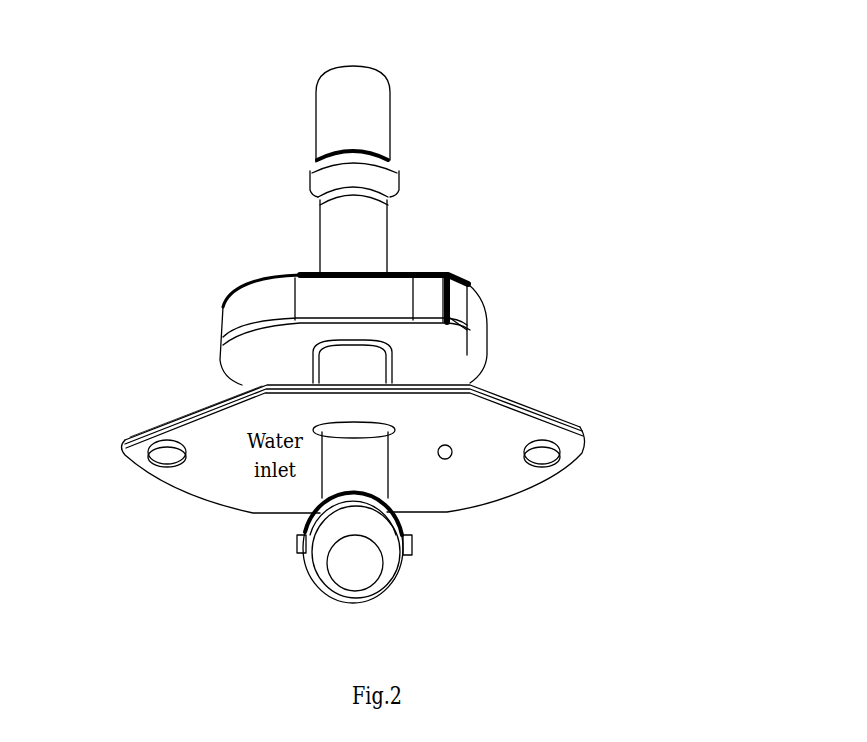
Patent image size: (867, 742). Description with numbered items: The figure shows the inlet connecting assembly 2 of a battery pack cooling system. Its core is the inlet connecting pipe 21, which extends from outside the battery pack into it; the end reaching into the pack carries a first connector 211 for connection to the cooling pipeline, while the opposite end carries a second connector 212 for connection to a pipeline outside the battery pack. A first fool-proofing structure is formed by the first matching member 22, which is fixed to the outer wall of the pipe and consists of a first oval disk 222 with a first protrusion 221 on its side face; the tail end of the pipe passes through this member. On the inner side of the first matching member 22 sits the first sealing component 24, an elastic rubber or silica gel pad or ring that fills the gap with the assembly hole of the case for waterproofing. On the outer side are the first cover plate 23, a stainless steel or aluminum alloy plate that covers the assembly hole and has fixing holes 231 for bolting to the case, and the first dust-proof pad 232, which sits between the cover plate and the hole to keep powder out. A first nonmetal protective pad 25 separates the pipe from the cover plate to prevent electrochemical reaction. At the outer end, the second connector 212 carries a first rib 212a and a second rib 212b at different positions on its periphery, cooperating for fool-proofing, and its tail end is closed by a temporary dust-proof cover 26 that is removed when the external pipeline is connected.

The inlet connecting assembly 2 is at (658, 223).
The inlet connecting pipe 21 is at (320, 236).
The first connector 211 is at (368, 123).
The first matching member 22 is at (549, 228).
The first protrusion 221 is at (458, 301).
The first oval disk 222 is at (378, 293).
The first cover plate 23 is at (427, 413).
The fixing holes 231 is at (124, 448).
The first dust-proof pad 232 is at (225, 391).
The first sealing component 24 is at (280, 273).
The first nonmetal protective pad 25 is at (425, 457).
The dust-proof cover 26 is at (365, 567).
The second connector 212 is at (388, 498).
The first rib 212a is at (415, 550).
The second rib 212b is at (297, 538).